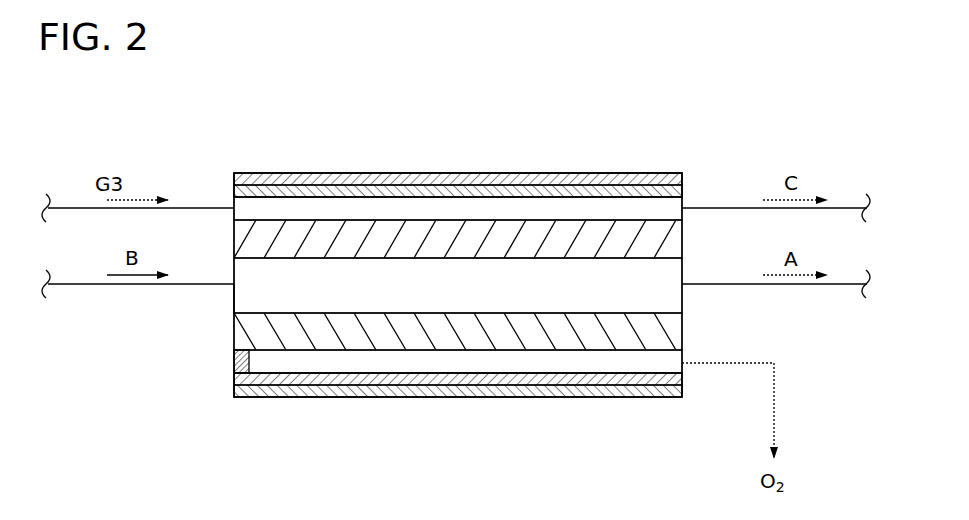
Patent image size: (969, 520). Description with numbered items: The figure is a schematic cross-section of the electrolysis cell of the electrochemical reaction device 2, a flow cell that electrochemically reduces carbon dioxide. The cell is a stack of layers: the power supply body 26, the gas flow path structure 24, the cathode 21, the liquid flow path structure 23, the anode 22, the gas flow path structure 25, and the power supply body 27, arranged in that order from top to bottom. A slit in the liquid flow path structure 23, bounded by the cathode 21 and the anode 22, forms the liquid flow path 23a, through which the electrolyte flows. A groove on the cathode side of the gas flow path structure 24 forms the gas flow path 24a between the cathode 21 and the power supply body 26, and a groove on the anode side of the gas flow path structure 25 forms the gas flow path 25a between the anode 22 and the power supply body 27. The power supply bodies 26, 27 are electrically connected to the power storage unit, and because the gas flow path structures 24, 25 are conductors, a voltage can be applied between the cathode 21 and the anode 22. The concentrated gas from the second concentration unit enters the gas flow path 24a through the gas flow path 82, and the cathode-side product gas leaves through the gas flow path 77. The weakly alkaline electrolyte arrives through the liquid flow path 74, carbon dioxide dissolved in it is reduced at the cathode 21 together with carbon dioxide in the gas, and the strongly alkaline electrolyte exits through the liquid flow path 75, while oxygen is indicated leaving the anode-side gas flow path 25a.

The electrochemical reaction device 2 is at (478, 106).
The cathode 21 is at (682, 235).
The anode 22 is at (682, 328).
The liquid flow path structure 23 is at (234, 270).
The liquid flow path 23a is at (234, 305).
The gas flow path structure 24 is at (488, 152).
The gas flow path 24a is at (427, 200).
The gas flow path structure 25 is at (488, 413).
The gas flow path 25a is at (405, 372).
The power supply body 26 is at (546, 173).
The power supply body 27 is at (521, 397).
The liquid flow path 74 is at (74, 284).
The liquid flow path 75 is at (847, 284).
The gas flow path 77 is at (848, 208).
The gas flow path 82 is at (74, 208).